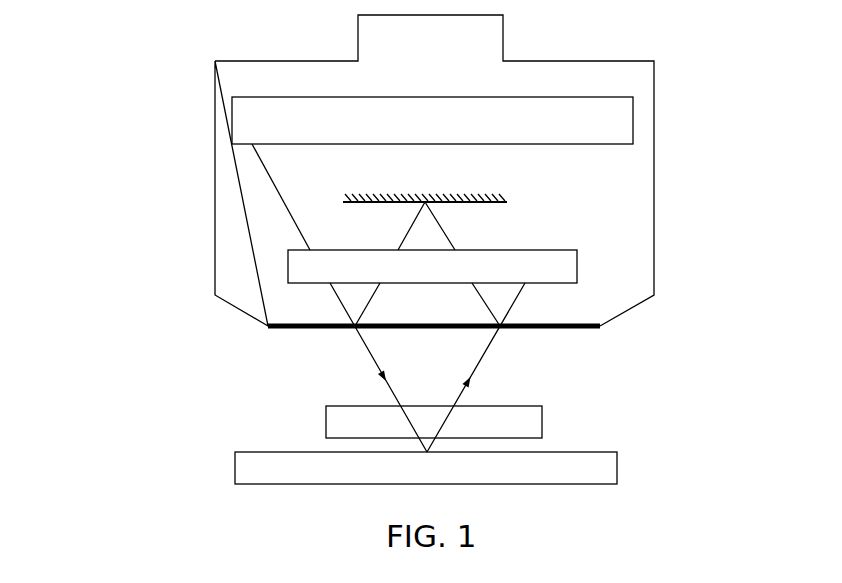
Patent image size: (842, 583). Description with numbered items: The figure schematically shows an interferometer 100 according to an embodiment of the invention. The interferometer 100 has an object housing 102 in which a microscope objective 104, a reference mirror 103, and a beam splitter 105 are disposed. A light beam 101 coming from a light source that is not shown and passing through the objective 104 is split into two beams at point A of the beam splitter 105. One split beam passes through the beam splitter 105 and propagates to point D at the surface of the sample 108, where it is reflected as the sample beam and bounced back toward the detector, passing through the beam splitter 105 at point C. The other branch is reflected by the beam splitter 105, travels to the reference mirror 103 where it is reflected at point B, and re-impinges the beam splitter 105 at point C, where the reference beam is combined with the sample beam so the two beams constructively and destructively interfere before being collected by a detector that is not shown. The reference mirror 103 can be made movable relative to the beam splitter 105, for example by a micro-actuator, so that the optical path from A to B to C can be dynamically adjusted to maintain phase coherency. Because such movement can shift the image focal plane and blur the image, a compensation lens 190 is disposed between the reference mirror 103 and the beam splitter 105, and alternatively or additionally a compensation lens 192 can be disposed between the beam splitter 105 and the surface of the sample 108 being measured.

The interferometer 100 is at (148, 130).
The light beam 101 is at (252, 170).
The object housing 102 is at (654, 113).
The reference mirror 103 is at (482, 197).
The microscope objective 104 is at (400, 126).
The beam splitter 105 is at (297, 332).
The sample 108 is at (617, 470).
The compensation lens 190 is at (545, 250).
The compensation lens 192 is at (510, 405).